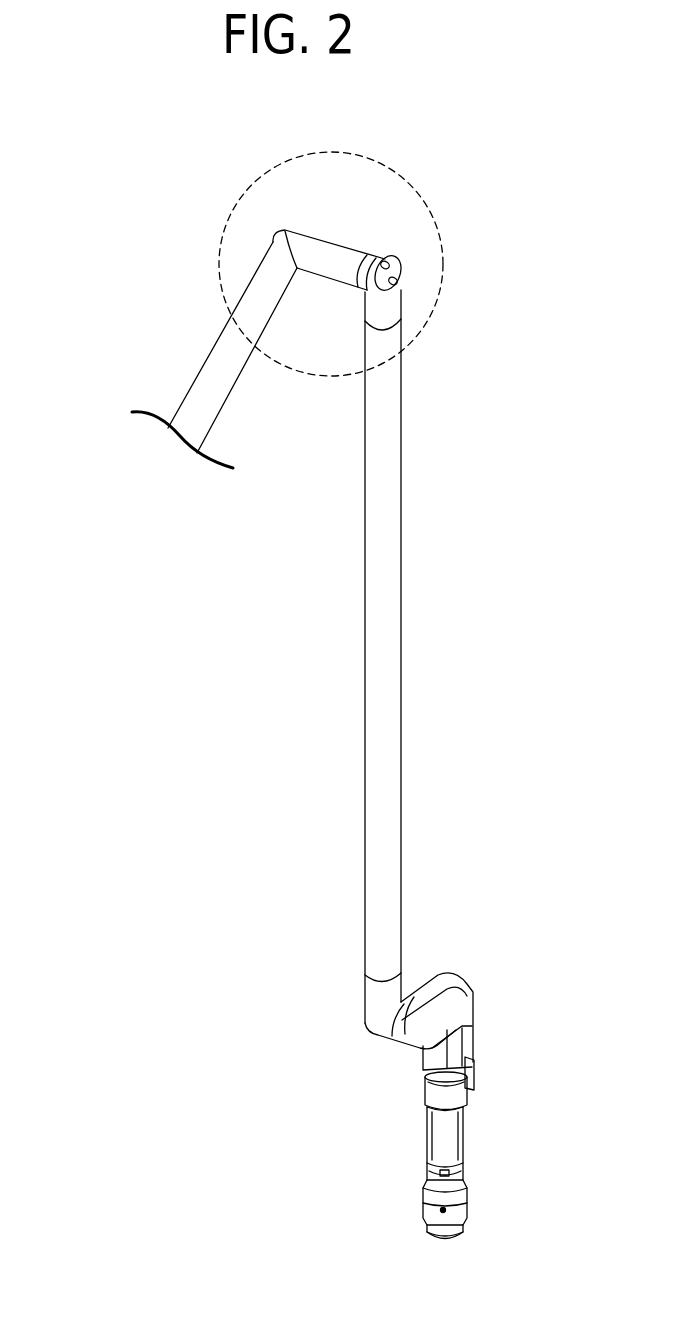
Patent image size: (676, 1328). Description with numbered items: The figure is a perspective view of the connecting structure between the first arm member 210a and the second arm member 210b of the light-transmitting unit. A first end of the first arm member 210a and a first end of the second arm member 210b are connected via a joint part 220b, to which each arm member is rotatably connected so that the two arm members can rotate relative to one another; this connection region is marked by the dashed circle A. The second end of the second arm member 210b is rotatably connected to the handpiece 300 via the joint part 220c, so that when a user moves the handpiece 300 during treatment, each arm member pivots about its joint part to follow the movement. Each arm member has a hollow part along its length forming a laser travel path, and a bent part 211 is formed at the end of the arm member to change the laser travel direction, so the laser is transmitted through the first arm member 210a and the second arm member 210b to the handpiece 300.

The enlarged detail region A is at (436, 221).
The first arm member 210a is at (215, 362).
The second arm member 210b is at (390, 413).
The joint part 220b is at (330, 255).
The bent part 211 is at (394, 267).
The joint part 220c is at (375, 998).
The handpiece 300 is at (452, 1128).